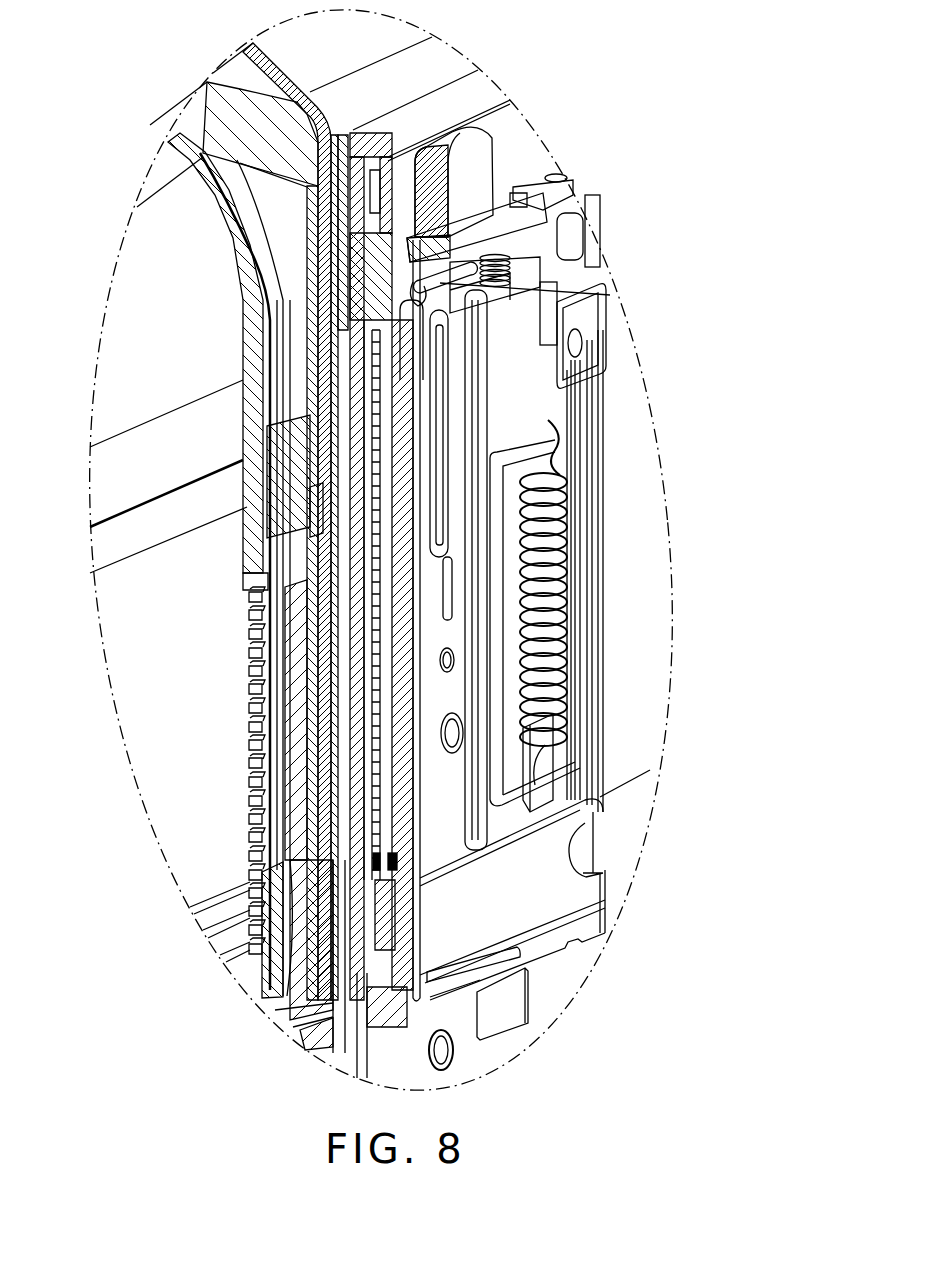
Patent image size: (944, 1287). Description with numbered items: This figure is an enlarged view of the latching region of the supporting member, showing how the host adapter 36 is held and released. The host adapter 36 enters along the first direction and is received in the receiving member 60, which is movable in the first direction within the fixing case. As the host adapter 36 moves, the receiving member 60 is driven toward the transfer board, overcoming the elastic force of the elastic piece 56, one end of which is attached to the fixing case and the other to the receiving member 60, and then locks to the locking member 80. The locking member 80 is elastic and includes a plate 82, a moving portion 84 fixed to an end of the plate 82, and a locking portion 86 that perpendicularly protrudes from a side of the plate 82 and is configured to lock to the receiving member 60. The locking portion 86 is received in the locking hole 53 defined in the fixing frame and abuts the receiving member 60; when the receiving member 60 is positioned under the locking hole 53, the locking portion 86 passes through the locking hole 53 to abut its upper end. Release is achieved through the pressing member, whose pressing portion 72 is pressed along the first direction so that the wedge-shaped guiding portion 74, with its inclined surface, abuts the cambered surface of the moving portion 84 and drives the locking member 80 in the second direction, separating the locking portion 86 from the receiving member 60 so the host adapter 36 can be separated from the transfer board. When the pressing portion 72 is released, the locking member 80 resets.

The host adapter 36 is at (437, 117).
The pressing portion 72 is at (472, 145).
The guiding portion 74 is at (540, 258).
The locking hole 53 is at (405, 291).
The moving portion 84 is at (477, 303).
The locking portion 86 is at (407, 338).
The locking member 80 is at (604, 620).
The plate 82 is at (457, 548).
The receiving member 60 is at (335, 478).
The elastic piece 56 is at (552, 600).